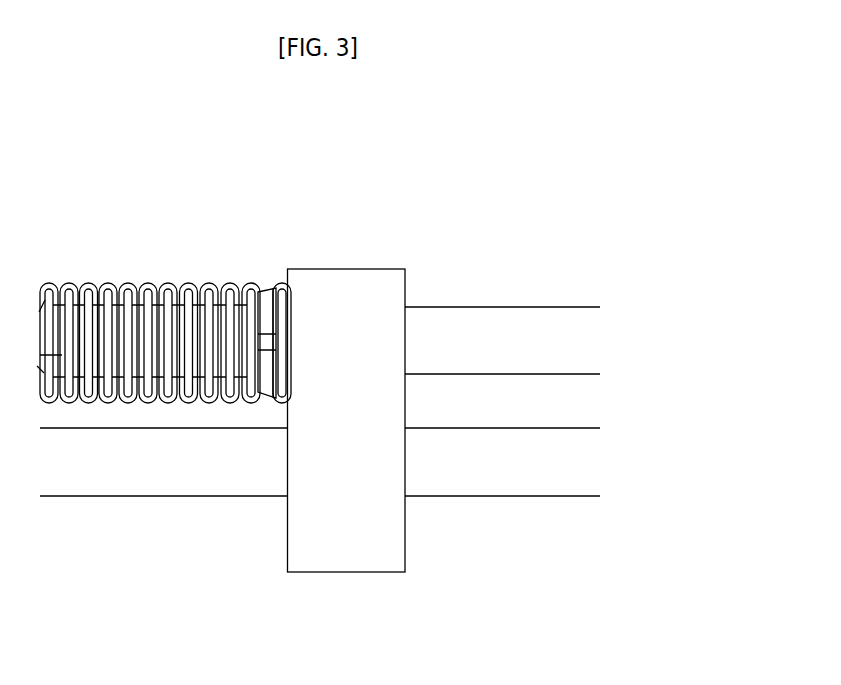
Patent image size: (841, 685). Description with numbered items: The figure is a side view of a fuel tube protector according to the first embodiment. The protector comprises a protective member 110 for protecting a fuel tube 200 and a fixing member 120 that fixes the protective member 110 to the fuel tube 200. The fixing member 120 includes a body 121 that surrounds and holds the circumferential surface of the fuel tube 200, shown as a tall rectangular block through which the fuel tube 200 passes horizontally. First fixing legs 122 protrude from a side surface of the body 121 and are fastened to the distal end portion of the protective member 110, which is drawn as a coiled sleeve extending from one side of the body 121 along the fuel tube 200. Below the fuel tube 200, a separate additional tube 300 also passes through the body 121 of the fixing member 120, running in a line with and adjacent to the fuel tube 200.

The protective member 110 is at (164, 289).
The fixing member 120 is at (374, 366).
The body 121 is at (382, 296).
The first fixing legs 122 is at (262, 283).
The fuel tube 200 is at (509, 306).
The additional tube 300 is at (516, 497).